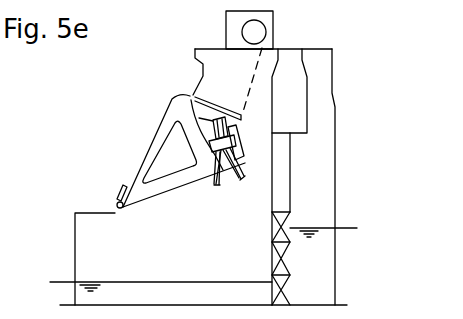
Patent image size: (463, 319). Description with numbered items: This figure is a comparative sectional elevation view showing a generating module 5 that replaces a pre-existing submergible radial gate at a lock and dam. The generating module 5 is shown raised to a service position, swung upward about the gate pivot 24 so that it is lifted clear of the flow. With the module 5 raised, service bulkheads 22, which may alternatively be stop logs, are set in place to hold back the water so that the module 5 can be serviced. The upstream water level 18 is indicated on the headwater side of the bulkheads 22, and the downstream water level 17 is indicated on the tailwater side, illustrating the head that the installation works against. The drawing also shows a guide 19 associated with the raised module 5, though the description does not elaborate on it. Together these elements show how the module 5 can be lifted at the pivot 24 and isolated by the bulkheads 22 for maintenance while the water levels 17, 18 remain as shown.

The generating module 5 is at (178, 164).
The downstream water level 17 is at (58, 270).
The upstream water level 18 is at (351, 215).
The slide guide 19 is at (243, 91).
The service bulkhead 22 is at (304, 263).
The gate pivot 24 is at (112, 194).